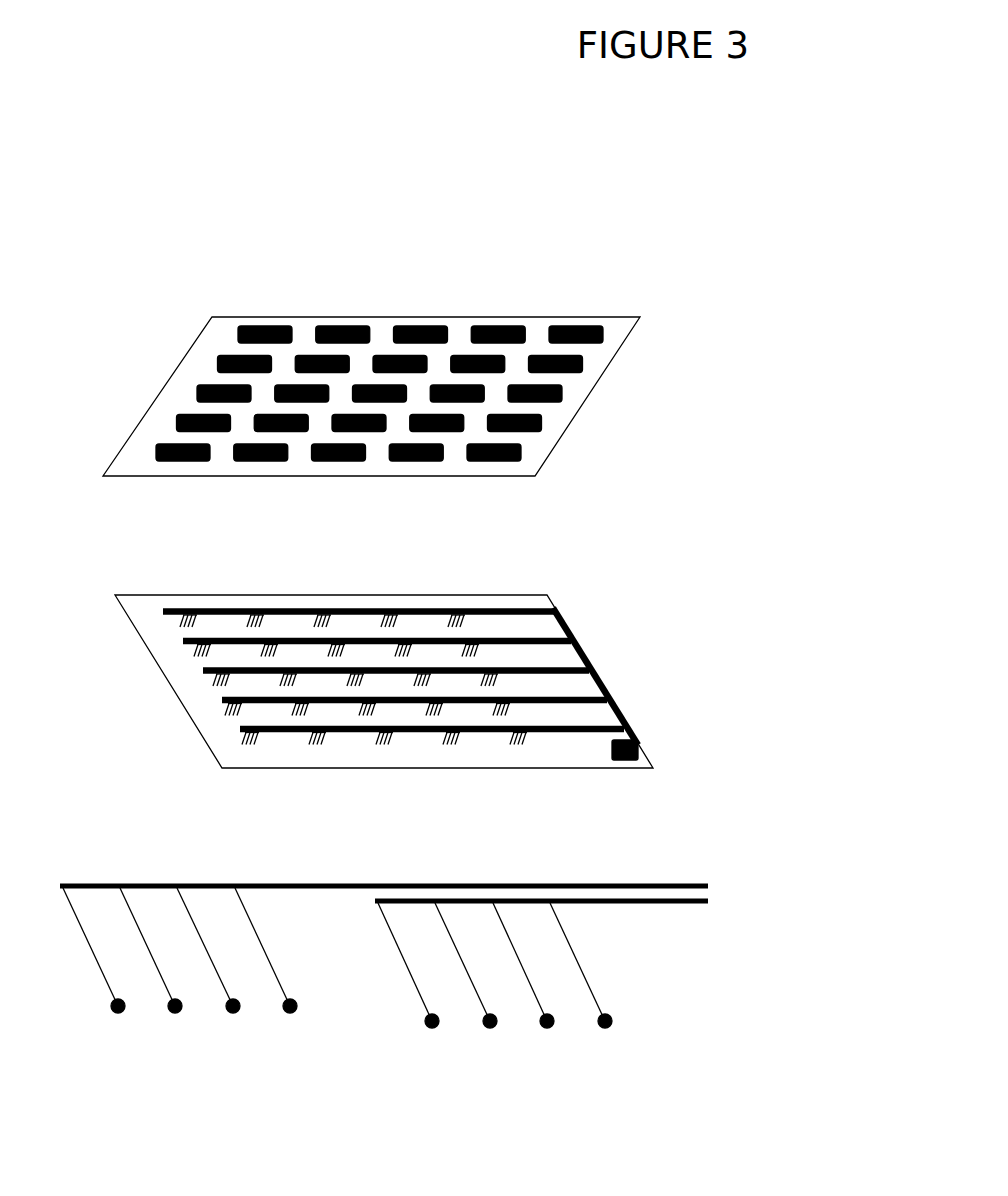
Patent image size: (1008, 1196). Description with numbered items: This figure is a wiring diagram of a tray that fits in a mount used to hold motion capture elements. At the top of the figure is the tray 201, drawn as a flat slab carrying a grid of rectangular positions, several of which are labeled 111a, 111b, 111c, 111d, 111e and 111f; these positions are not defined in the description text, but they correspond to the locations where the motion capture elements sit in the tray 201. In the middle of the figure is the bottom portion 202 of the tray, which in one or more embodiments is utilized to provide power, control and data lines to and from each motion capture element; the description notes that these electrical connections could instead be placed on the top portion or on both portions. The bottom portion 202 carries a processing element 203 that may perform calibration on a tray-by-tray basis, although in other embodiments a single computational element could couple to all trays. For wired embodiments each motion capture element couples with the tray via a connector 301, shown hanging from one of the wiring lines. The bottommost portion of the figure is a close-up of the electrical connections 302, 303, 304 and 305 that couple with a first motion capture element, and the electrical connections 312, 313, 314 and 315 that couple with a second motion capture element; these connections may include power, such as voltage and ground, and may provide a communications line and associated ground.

The LED/electrode pad 111a is at (265, 324).
The LED/electrode pad 111b is at (344, 324).
The LED/electrode pad 111c is at (424, 324).
The LED/electrode pad 111d is at (502, 324).
The LED/electrode pad 111e is at (582, 320).
The LED/electrode pad 111f is at (166, 443).
The tray 201 is at (583, 403).
The bottom portion 202 is at (537, 600).
The processing element 203 is at (640, 742).
The connector 301 is at (252, 742).
The electrical connection 302 is at (123, 1025).
The electrical connection 303 is at (181, 1025).
The electrical connection 304 is at (239, 1025).
The electrical connection 305 is at (300, 1025).
The electrical connection 312 is at (438, 1042).
The electrical connection 313 is at (497, 1042).
The electrical connection 314 is at (556, 1042).
The electrical connection 315 is at (616, 1042).